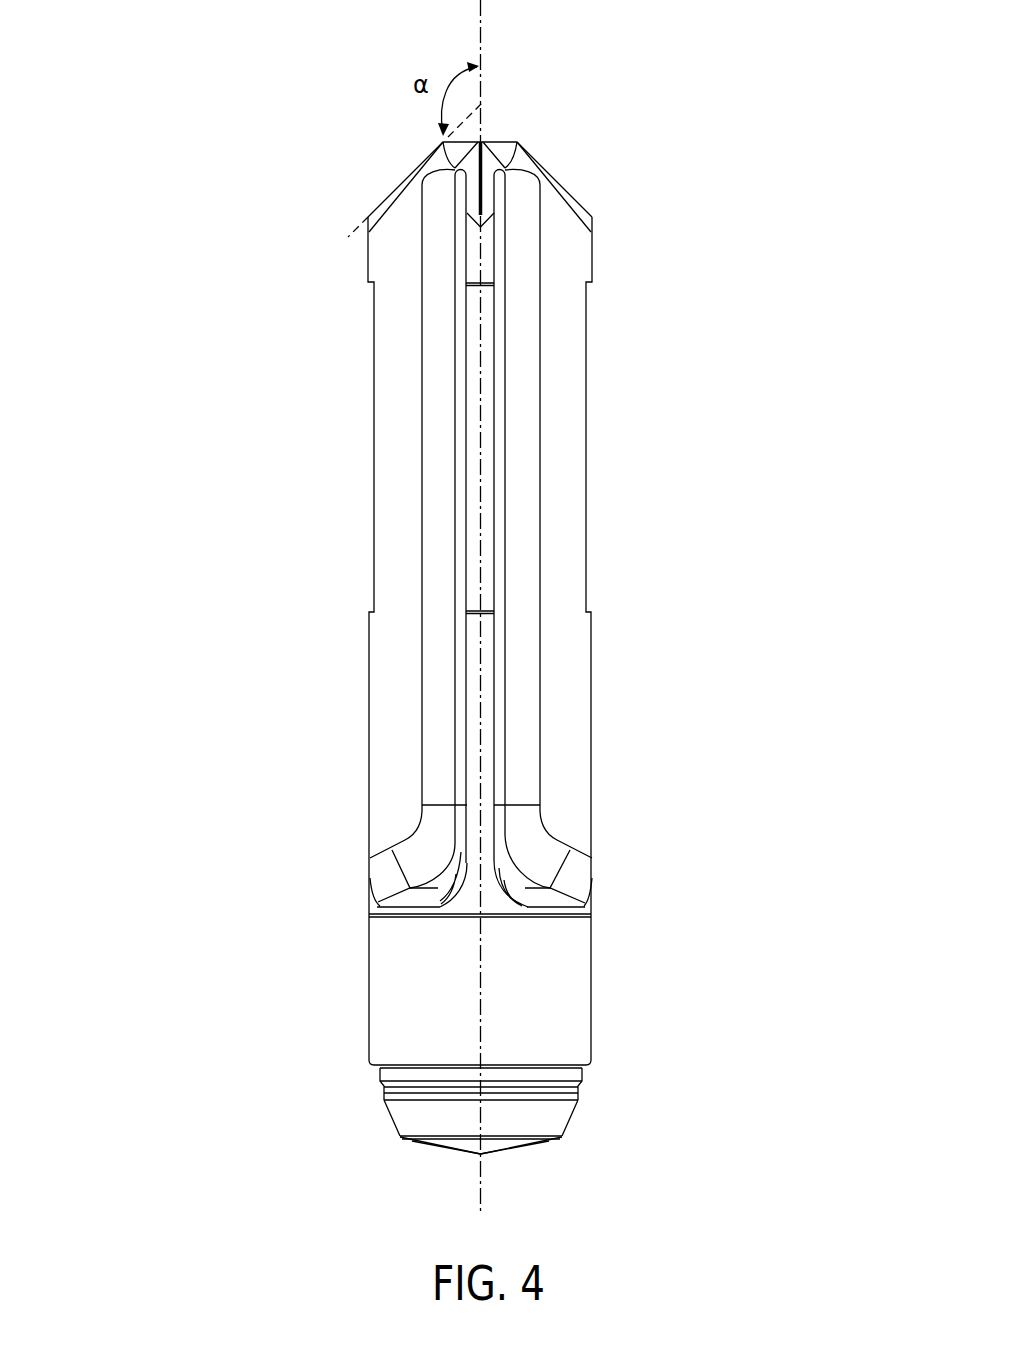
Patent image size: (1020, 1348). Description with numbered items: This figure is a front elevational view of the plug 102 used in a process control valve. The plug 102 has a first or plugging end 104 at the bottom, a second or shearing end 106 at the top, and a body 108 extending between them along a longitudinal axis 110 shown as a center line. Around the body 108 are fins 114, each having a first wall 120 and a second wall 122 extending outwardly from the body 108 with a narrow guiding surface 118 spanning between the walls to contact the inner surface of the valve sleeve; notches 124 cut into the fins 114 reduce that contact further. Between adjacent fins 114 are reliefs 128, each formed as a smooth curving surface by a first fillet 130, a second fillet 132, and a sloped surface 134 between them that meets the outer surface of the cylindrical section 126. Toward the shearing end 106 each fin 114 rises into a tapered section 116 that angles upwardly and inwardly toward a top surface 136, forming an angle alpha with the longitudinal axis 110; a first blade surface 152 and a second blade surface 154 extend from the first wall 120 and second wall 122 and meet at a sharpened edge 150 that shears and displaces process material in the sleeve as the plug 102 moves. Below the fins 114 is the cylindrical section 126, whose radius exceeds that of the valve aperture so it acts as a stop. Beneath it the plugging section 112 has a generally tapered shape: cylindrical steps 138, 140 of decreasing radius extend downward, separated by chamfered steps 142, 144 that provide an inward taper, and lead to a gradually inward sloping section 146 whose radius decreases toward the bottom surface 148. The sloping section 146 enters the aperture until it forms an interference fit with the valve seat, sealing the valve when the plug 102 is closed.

The plug 102 is at (353, 127).
The first or plugging end 104 is at (468, 1150).
The second or shearing end 106 is at (481, 142).
The body 108 is at (507, 377).
The longitudinal axis 110 is at (480, 32).
The plugging section 112 is at (483, 1162).
The fins 114 is at (369, 660).
The tapered section 116 is at (405, 183).
The guiding surface 118 is at (473, 652).
The first wall 120 is at (468, 755).
The second wall 122 is at (493, 735).
The notches 124 is at (373, 447).
The cylindrical section 126 is at (410, 1000).
The reliefs 128 is at (415, 847).
The first fillet 130 is at (540, 840).
The second fillet 132 is at (513, 890).
The sloped surface 134 is at (550, 895).
The top surface 136 is at (512, 143).
The step 138 is at (380, 1072).
The step 140 is at (382, 1088).
The step 142 is at (583, 1083).
The step 144 is at (575, 1093).
The gradually inward sloping section 146 is at (553, 1122).
The bottom surface 148 is at (442, 1147).
The edge 150 is at (484, 199).
The first blade surface 152 is at (474, 185).
The second blade surface 154 is at (488, 214).